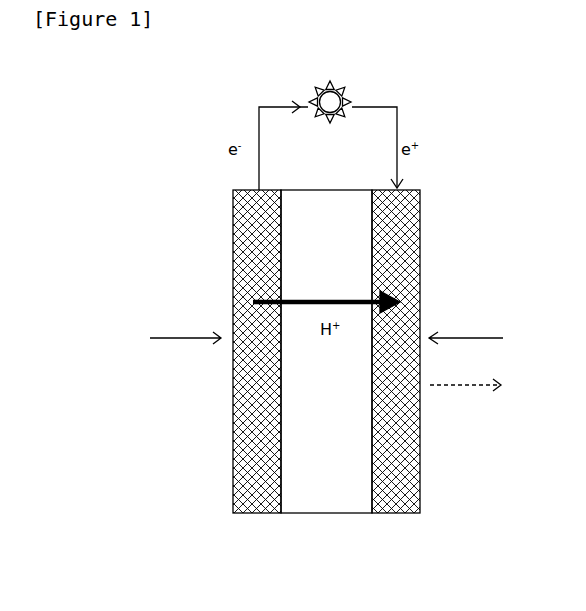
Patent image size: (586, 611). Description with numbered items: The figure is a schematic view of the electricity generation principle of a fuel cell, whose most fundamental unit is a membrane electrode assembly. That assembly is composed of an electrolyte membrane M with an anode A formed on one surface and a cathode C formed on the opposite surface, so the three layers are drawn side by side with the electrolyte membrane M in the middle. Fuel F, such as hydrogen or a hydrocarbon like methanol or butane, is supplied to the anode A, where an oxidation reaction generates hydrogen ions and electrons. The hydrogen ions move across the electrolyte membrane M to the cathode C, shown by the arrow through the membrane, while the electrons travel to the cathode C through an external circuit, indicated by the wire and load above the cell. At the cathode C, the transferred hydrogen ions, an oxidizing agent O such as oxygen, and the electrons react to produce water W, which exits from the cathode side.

The anode A is at (258, 513).
The electrolyte membrane M is at (327, 513).
The cathode C is at (400, 513).
The fuel F is at (174, 337).
The oxidizing agent O is at (477, 337).
The water W is at (479, 384).